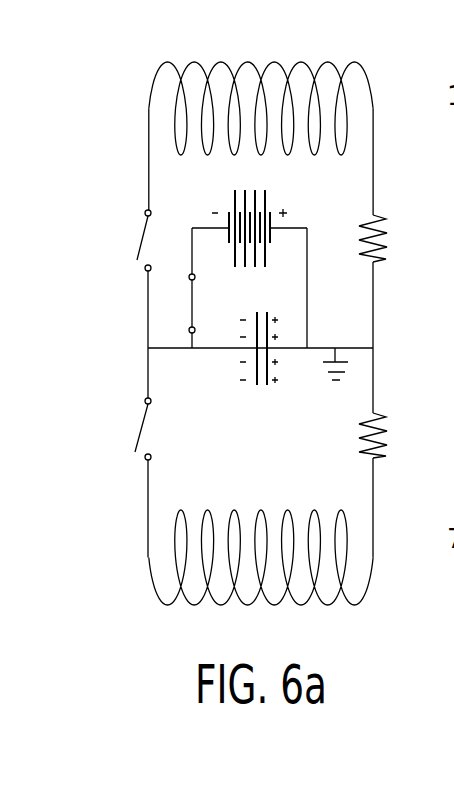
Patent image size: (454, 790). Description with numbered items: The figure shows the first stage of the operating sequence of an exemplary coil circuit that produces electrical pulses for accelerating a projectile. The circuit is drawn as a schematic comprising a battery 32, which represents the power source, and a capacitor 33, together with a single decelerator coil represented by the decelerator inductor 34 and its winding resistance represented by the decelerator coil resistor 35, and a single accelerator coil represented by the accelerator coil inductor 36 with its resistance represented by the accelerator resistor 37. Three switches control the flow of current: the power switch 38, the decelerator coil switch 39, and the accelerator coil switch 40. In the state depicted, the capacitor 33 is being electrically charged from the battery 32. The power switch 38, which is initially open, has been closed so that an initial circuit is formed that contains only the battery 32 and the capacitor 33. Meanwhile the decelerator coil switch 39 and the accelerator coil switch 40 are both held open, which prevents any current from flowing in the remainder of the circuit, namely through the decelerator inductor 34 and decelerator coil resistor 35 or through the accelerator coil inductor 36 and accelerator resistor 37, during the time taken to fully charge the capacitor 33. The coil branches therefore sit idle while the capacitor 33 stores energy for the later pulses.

The battery 32 is at (225, 203).
The capacitor 33 is at (243, 367).
The decelerator inductor 34 is at (350, 113).
The decelerator coil resistor 35 is at (382, 239).
The accelerator coil inductor 36 is at (348, 550).
The accelerator resistor 37 is at (382, 433).
The power switch 38 is at (190, 300).
The decelerator coil switch 39 is at (142, 242).
The accelerator coil switch 40 is at (142, 428).